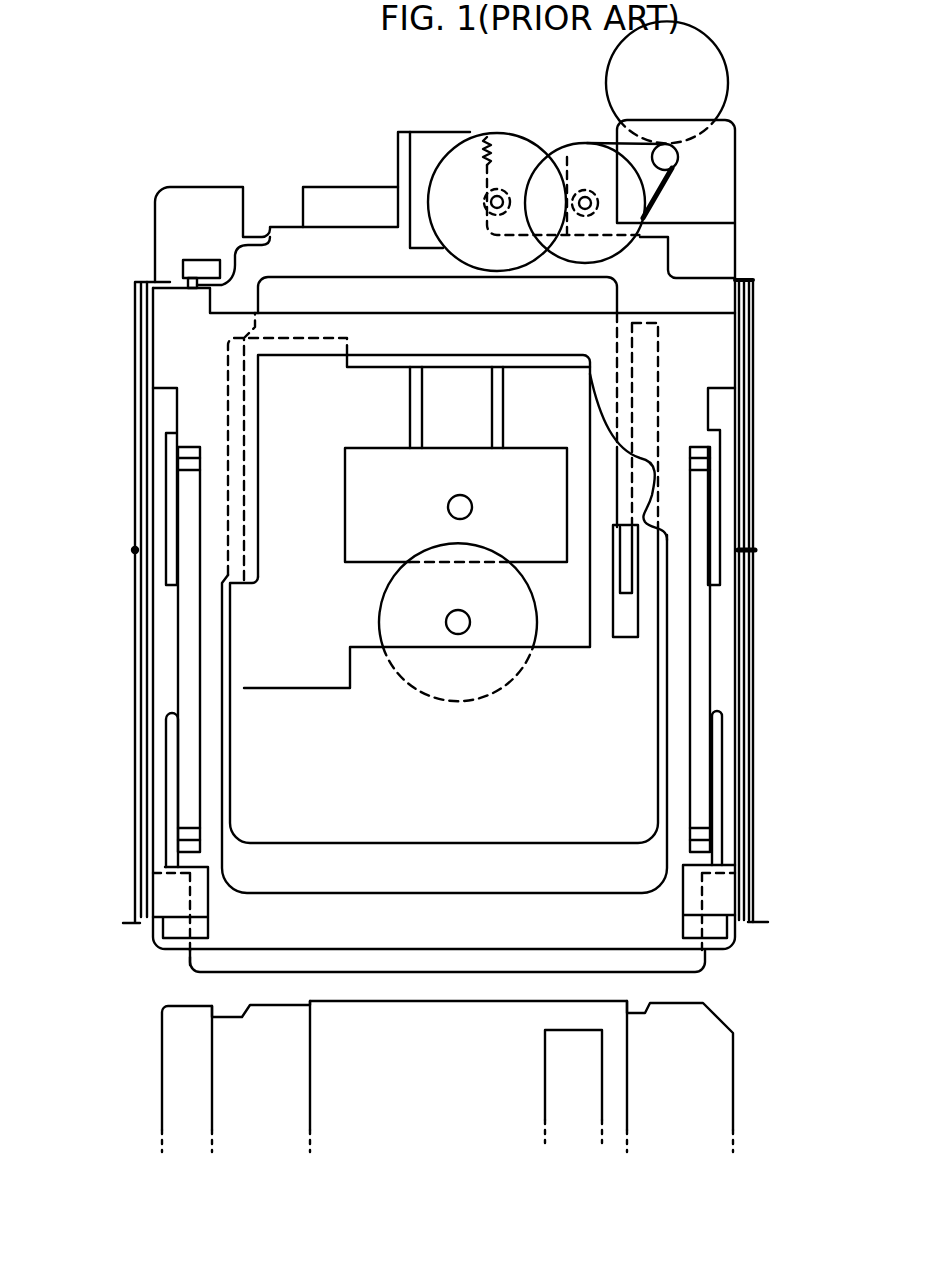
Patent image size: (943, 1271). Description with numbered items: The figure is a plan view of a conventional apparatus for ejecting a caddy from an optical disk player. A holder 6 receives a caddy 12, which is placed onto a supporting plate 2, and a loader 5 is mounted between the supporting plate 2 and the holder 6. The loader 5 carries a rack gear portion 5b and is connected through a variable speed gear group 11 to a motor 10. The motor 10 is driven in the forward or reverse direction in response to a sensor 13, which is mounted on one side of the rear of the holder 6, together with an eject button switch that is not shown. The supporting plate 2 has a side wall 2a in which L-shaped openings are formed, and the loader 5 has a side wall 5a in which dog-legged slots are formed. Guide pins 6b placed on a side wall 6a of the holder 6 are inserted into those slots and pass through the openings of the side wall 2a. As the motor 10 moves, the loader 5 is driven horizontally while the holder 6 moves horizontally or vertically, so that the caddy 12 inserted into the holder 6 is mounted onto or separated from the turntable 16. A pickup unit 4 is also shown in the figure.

The supporting plate 2 is at (196, 204).
The side wall of supporting plate 2a is at (137, 410).
The pickup unit 4 is at (385, 462).
The loader 5 is at (713, 300).
The side wall of loader 5a is at (142, 497).
The rack gear portion 5b is at (487, 134).
The holder 6 is at (715, 683).
The side wall of holder 6a is at (142, 615).
The guide pins 6b is at (134, 550).
The motor 10 is at (663, 103).
The variable speed gear group 11 is at (575, 152).
The caddy 12 is at (708, 1043).
The sensor 13 is at (200, 262).
The turntable 16 is at (403, 627).